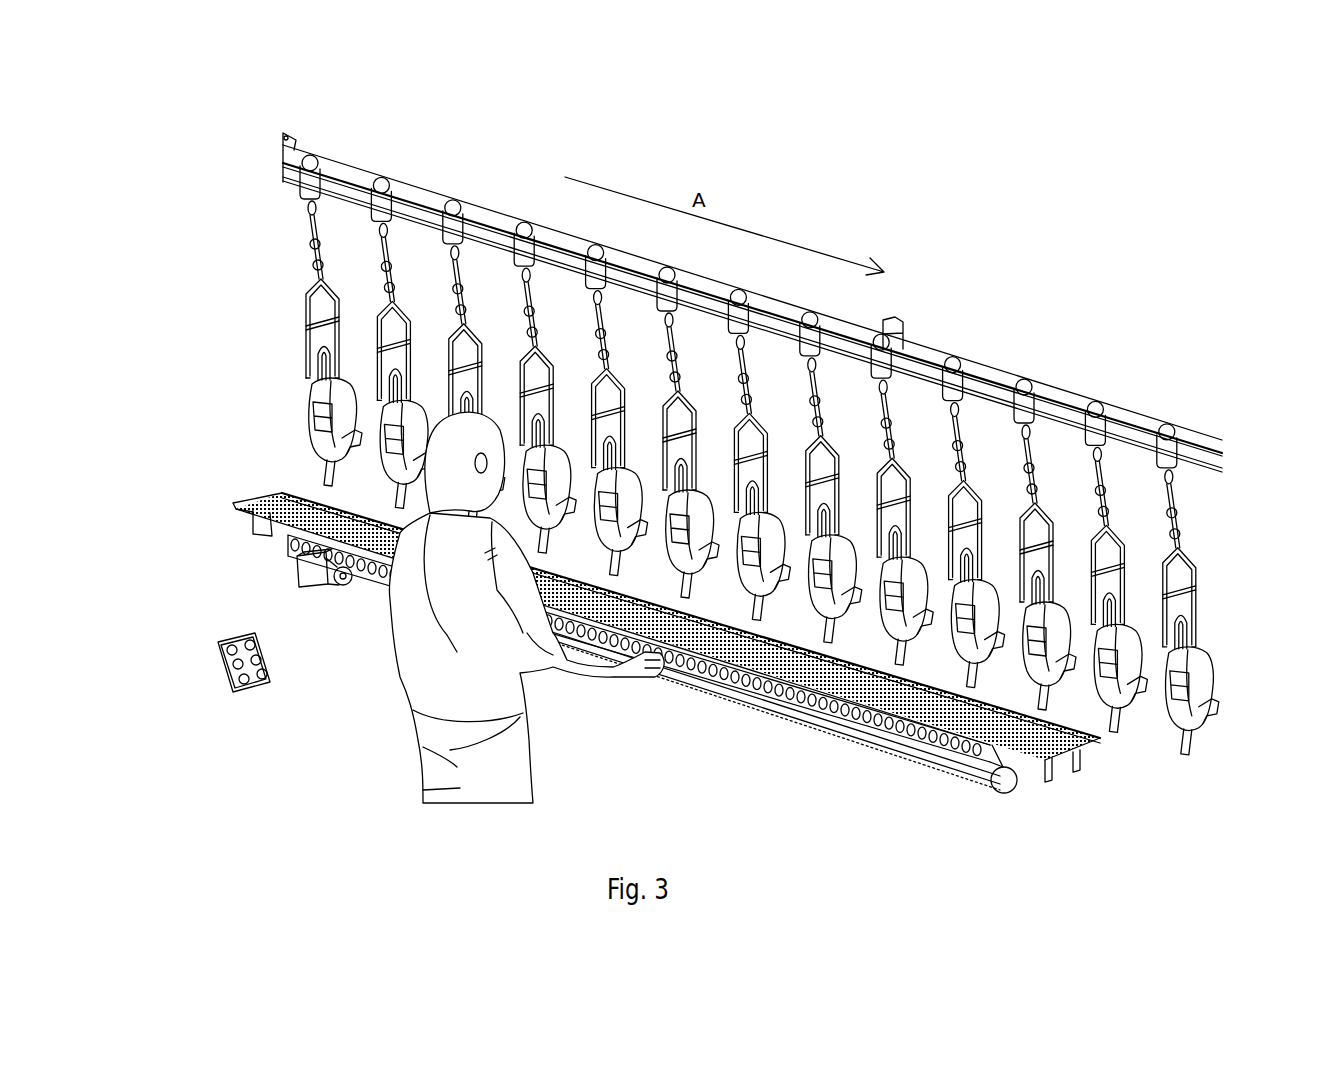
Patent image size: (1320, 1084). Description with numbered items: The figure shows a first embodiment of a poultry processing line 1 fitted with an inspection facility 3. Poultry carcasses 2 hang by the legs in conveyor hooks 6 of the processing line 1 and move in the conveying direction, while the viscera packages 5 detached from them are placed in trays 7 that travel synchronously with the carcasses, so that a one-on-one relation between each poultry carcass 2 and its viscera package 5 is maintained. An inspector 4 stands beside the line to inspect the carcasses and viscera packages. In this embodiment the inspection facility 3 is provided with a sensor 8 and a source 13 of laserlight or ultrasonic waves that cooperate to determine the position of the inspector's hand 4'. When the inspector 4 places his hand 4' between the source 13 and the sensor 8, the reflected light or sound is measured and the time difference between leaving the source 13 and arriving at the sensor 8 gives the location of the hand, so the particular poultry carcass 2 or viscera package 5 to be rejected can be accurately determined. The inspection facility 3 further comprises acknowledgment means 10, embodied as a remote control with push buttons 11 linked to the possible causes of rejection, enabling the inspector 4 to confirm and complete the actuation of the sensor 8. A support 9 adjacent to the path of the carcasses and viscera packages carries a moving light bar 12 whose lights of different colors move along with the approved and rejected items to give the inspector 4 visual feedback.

The processing line 1 is at (932, 338).
The poultry carcass 2 is at (1220, 689).
The inspection facility 3 is at (896, 816).
The inspector 4 is at (460, 607).
The inspector's hand 4' is at (609, 746).
The viscera package 5 is at (276, 482).
The conveyor hook 6 is at (1212, 553).
The tray 7 is at (219, 506).
The sensor 8 is at (276, 570).
The support 9 is at (1021, 767).
The acknowledgment means 10 is at (226, 712).
The push buttons 11 is at (291, 658).
The moving light bar 12 is at (771, 704).
The source of ultrasonic waves or laserlight 13 is at (339, 571).